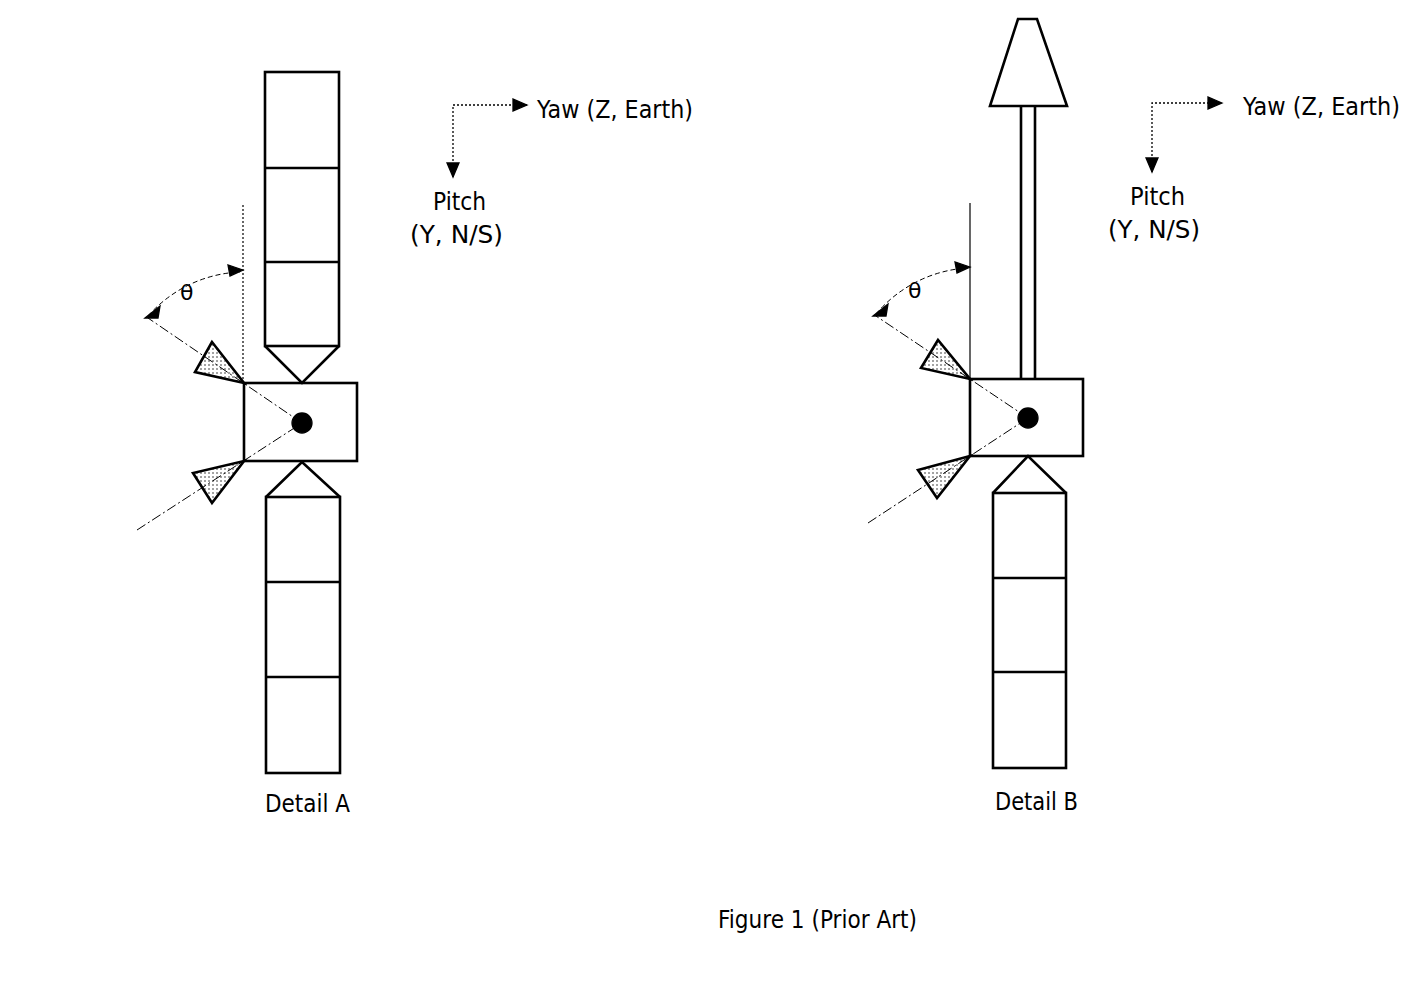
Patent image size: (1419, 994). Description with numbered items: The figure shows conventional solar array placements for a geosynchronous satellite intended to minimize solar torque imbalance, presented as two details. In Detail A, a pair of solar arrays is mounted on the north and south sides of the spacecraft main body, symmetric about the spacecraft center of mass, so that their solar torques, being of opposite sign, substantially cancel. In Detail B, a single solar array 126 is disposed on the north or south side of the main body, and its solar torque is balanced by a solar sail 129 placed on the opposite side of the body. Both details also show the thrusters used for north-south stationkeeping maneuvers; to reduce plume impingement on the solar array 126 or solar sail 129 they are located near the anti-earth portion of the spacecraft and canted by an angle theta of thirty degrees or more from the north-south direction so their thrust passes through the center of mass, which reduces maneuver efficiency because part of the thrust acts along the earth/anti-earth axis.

The solar array 126 is at (1053, 622).
The solar sail 129 is at (1020, 127).